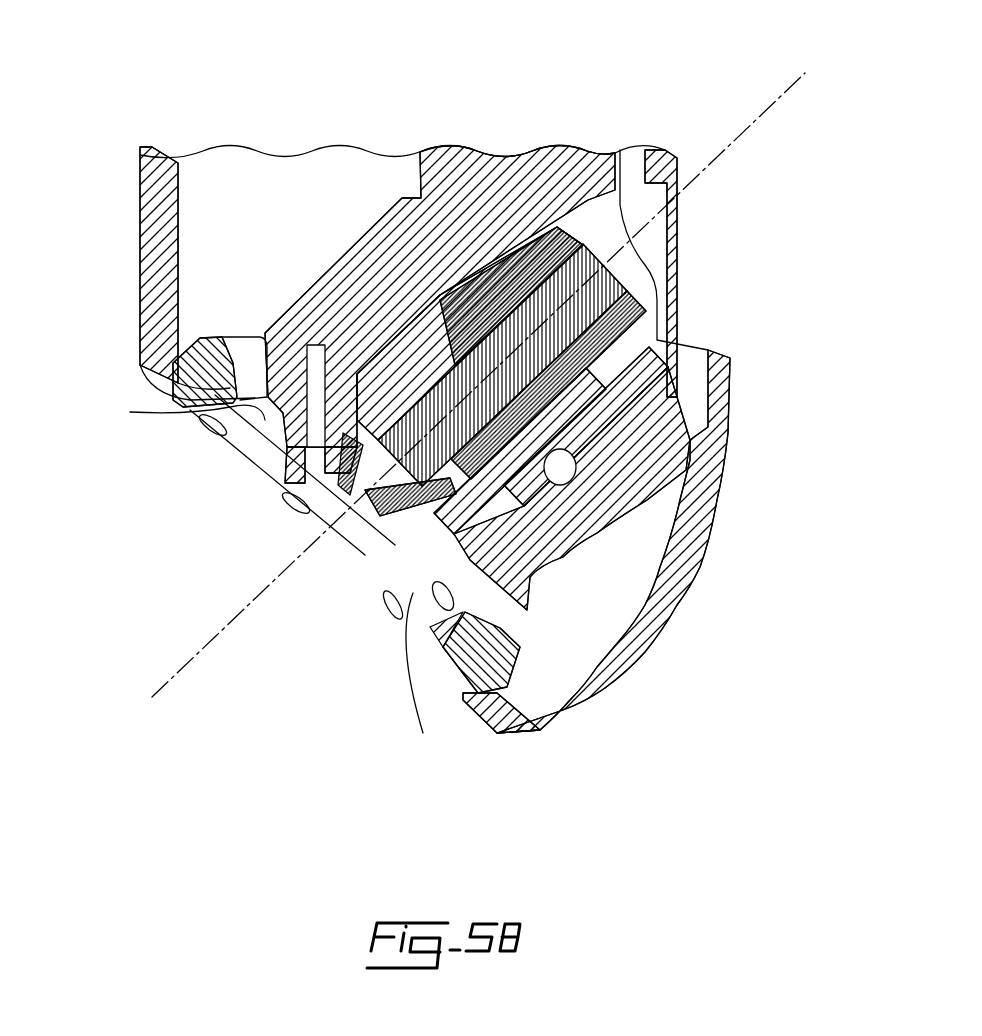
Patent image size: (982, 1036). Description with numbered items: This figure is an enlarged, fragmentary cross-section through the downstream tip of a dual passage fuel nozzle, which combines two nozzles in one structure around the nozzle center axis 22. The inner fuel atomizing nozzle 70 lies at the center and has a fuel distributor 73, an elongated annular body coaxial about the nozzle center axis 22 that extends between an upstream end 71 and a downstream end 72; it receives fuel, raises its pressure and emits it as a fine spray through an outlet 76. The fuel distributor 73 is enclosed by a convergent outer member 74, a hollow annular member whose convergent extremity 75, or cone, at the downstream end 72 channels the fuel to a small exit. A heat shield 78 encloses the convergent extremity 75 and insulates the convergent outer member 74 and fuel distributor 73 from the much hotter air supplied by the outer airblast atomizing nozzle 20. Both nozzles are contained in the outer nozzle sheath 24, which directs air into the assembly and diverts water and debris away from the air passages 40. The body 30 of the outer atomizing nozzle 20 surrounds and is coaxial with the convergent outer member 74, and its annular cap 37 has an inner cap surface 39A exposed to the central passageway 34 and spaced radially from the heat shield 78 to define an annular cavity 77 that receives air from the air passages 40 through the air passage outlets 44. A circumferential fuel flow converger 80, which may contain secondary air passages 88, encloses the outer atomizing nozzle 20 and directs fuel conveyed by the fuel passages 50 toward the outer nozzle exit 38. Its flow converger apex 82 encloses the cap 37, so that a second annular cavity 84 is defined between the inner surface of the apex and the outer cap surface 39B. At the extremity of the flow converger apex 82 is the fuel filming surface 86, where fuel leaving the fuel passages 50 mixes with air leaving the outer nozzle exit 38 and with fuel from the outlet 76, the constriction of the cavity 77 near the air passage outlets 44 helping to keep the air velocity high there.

The outer airblast atomizing nozzle 20 is at (605, 517).
The nozzle center axis 22 is at (729, 150).
The outer nozzle sheath 24 is at (160, 263).
The body 30 is at (570, 448).
The central passageway 34 is at (283, 337).
The annular cap 37 is at (507, 623).
The outer nozzle exit 38 is at (312, 515).
The inner cap surface 39A is at (441, 677).
The outer cap surface 39B is at (275, 420).
The air passages 40 is at (603, 309).
The air passage outlets 44 is at (370, 447).
The fuel passages 50 is at (360, 330).
The inner fuel atomizing nozzle 70 is at (662, 327).
The upstream end 71 is at (578, 222).
The downstream end 72 is at (345, 510).
The fuel distributor 73 is at (603, 290).
The convergent outer member 74 is at (445, 193).
The convergent extremity 75 is at (335, 392).
The outlet 76 is at (515, 590).
The annular cavity 77 is at (378, 553).
The heat shield 78 is at (265, 350).
The circumferential fuel flow converger 80 is at (655, 497).
The flow converger apex 82 is at (275, 460).
The second annular cavity 84 is at (473, 567).
The fuel filming surface 86 is at (300, 482).
The secondary air passages 88 is at (197, 357).